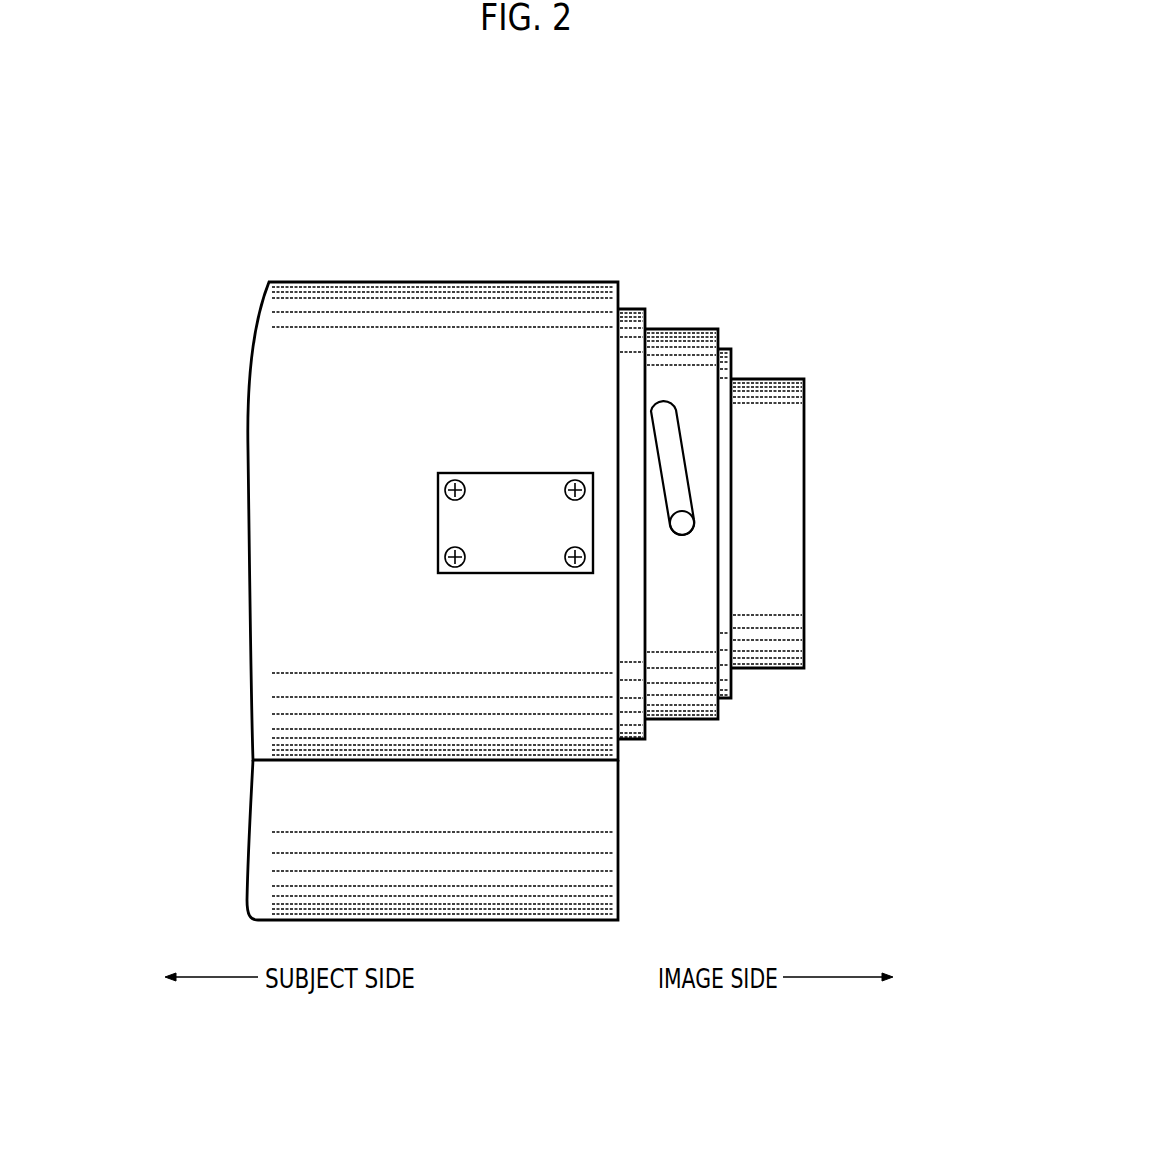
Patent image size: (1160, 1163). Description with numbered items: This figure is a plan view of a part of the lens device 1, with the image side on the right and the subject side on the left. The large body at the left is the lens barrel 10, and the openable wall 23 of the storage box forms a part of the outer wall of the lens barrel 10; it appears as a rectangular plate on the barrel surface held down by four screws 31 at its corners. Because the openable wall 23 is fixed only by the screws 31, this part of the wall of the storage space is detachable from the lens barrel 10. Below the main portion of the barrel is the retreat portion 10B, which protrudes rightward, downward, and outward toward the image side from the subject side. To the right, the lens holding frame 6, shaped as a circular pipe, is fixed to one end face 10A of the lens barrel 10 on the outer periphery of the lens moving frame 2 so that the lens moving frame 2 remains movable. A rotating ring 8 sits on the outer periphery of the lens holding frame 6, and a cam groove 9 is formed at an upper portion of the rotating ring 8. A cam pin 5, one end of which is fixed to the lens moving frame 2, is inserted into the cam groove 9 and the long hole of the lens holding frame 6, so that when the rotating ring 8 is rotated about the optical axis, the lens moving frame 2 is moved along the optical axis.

The lens device 1 is at (720, 251).
The lens moving frame 2 is at (776, 388).
The cam pin 5 is at (676, 537).
The lens holding frame 6 is at (725, 352).
The rotating ring 8 is at (680, 340).
The cam groove 9 is at (673, 455).
The lens barrel 10 is at (525, 300).
The end face 10A is at (622, 292).
The retreat portion 10B is at (597, 820).
The openable wall 23 is at (505, 490).
The screws 31 is at (446, 480).